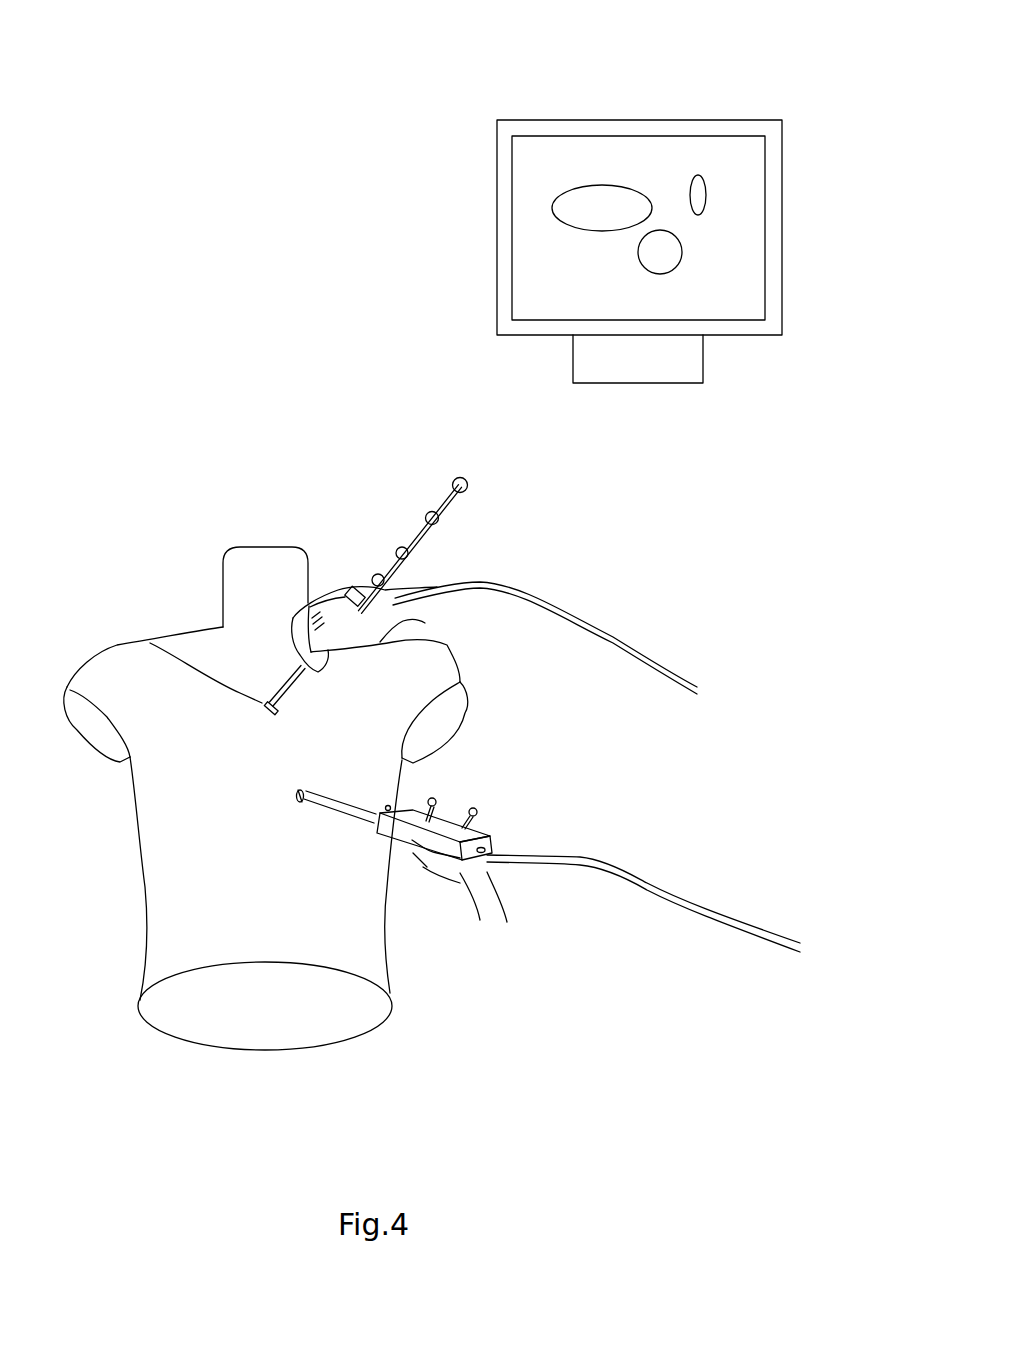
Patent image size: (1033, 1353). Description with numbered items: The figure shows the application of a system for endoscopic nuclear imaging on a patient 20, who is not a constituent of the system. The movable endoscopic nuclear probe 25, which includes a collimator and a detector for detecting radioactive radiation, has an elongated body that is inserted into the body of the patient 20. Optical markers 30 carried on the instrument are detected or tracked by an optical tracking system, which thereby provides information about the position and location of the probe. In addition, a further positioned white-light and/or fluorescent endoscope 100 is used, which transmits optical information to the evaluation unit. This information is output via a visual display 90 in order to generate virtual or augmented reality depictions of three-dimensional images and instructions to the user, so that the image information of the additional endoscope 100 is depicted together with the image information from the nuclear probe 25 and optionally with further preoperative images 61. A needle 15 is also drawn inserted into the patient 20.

The visual display 90 is at (497, 240).
The preoperative images 61 is at (628, 175).
The patient 20 is at (387, 948).
The needle 15 is at (262, 702).
The optical markers 30 is at (455, 484).
The endoscopic nuclear probe 25 is at (378, 608).
The white-light and/or fluorescent endoscope 100 is at (488, 834).